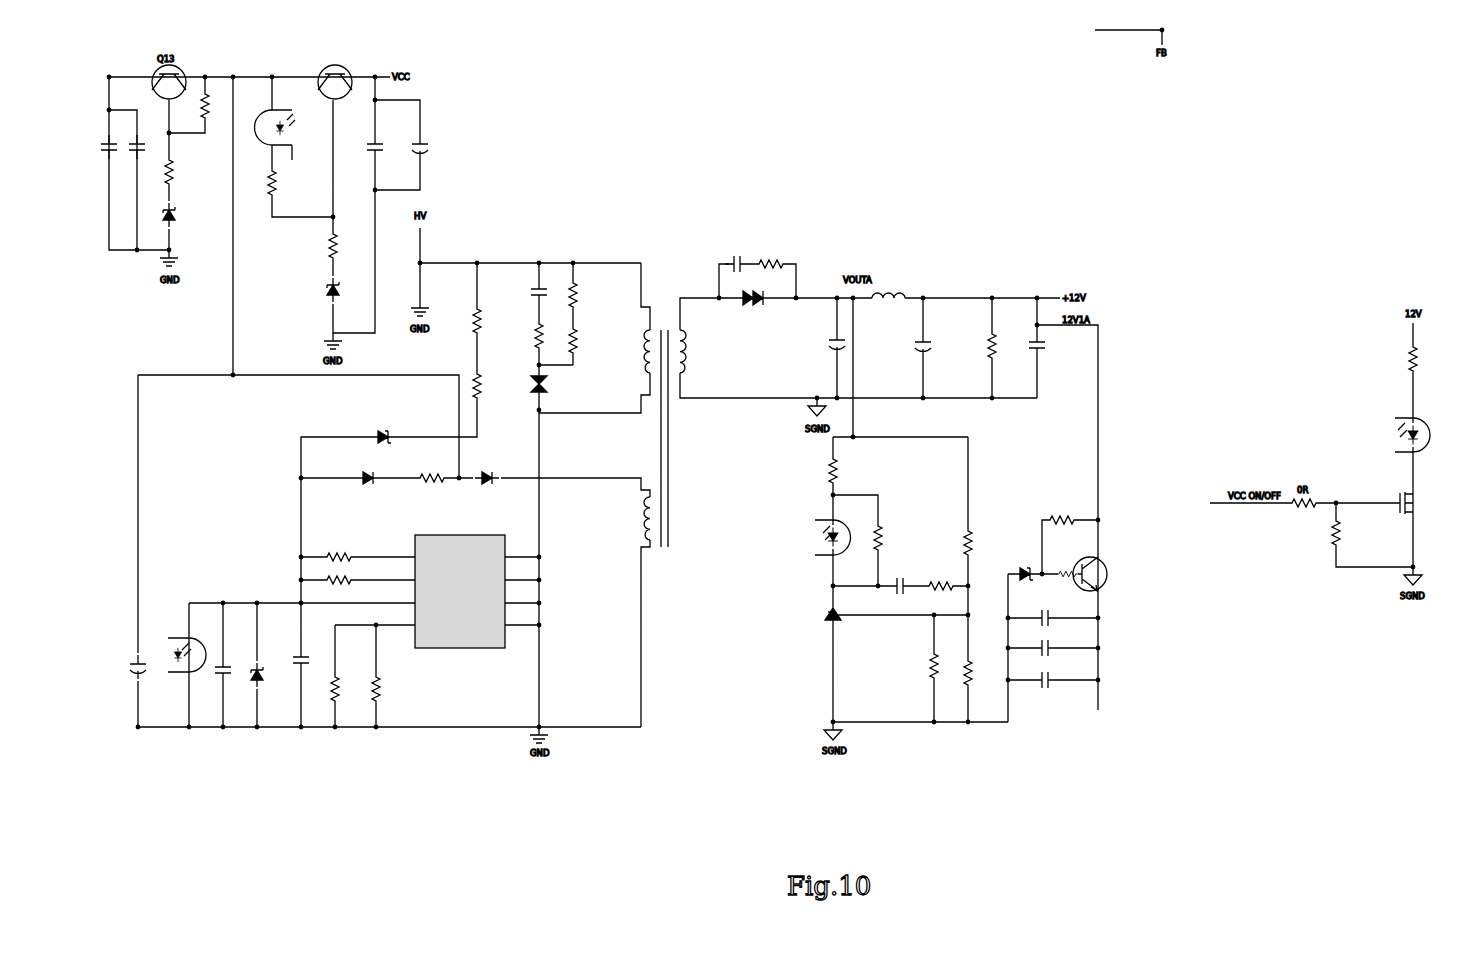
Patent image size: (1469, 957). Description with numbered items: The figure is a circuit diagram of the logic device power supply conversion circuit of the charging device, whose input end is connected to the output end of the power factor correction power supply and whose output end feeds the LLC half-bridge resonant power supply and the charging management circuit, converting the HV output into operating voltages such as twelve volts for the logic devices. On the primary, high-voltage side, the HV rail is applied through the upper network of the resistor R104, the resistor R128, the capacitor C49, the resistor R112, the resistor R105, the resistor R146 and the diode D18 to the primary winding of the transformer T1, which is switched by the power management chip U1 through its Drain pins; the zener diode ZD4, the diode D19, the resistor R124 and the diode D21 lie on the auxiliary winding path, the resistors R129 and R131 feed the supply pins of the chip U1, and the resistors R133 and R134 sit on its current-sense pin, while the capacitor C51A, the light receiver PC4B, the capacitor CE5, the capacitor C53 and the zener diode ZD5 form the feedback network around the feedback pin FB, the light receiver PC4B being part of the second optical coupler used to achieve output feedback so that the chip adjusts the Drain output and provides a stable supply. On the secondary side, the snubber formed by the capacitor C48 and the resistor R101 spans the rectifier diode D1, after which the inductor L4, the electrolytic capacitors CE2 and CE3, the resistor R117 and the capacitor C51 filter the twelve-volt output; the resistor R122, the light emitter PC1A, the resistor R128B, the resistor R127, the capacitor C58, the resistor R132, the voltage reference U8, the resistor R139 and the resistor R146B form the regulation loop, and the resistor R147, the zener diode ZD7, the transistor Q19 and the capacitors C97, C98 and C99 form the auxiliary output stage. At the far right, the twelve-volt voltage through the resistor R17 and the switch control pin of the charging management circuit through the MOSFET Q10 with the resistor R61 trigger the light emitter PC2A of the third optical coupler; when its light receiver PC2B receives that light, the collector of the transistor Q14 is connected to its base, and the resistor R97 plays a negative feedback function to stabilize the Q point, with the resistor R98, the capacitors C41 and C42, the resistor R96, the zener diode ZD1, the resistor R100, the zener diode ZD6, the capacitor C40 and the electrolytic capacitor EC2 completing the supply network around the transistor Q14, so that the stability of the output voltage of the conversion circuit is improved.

The transistor Q14 is at (335, 71).
The resistor R98 is at (224, 105).
The capacitor C41 is at (114, 147).
The capacitor C42 is at (142, 147).
The resistor R96 is at (179, 171).
The zener diode ZD1 is at (179, 214).
The light receiver PC2B is at (287, 135).
The resistor R97 is at (282, 181).
The resistor R100 is at (318, 251).
The zener diode ZD6 is at (344, 290).
The capacitor C40 is at (384, 147).
The electrolytic capacitor EC2 is at (430, 147).
The resistor R104 is at (465, 320).
The resistor R128 is at (487, 390).
The capacitor C49 is at (518, 292).
The resistor R112 is at (525, 335).
The resistor R105 is at (597, 292).
The resistor R146 is at (597, 338).
The diode D18 is at (565, 387).
The transformer T1 is at (663, 432).
The zener diode ZD4 is at (383, 422).
The diode D19 is at (367, 488).
The resistor R124 is at (433, 489).
The diode D21 is at (496, 487).
The resistor R129 is at (340, 547).
The resistor R131 is at (340, 590).
The controller IC U1 is at (460, 592).
The resistor R133 is at (347, 688).
The resistor R134 is at (388, 688).
The capacitor C51A is at (304, 660).
The light receiver PC4B is at (182, 647).
The electrolytic capacitor CE5 is at (156, 679).
The capacitor C53 is at (226, 674).
The zener diode ZD5 is at (262, 671).
The capacitor C48 is at (739, 252).
The resistor R101 is at (775, 250).
The rectifier diode D1 is at (753, 290).
The inductor L4 is at (888, 286).
The electrolytic capacitor CE2 is at (809, 344).
The electrolytic capacitor CE3 is at (945, 339).
The resistor R117 is at (1004, 345).
The capacitor C51 is at (1058, 346).
The resistor R122 is at (845, 470).
The optocoupler PC1A is at (814, 534).
The resistor R128 R128B is at (890, 537).
The resistor R127 is at (982, 542).
The capacitor C58 is at (891, 595).
The resistor R132 is at (942, 597).
The voltage reference U8 is at (815, 614).
The resistor R139 is at (923, 665).
The resistor R146 R146B is at (980, 670).
The resistor R147 is at (1063, 519).
The zener diode ZD7 is at (1025, 564).
The transistor Q19 is at (1111, 574).
The capacitor C97 is at (1064, 612).
The capacitor C98 is at (1064, 642).
The capacitor C99 is at (1055, 682).
The resistor R17 is at (1436, 358).
The light emitter PC2A is at (1431, 435).
The MOSFET Q10 is at (1429, 502).
The resistor R61 is at (1359, 532).